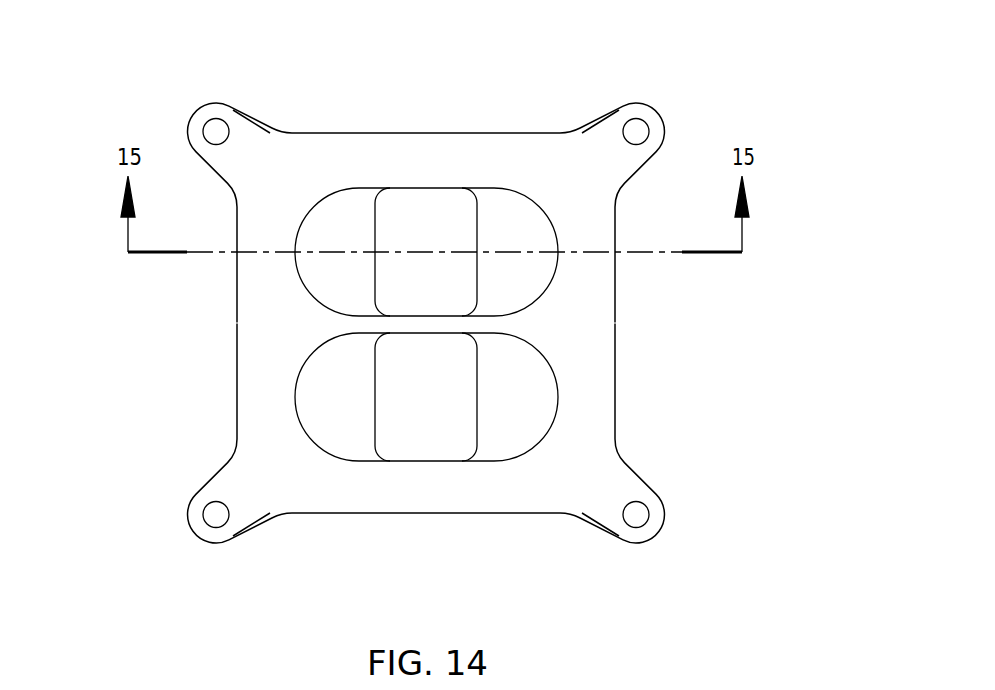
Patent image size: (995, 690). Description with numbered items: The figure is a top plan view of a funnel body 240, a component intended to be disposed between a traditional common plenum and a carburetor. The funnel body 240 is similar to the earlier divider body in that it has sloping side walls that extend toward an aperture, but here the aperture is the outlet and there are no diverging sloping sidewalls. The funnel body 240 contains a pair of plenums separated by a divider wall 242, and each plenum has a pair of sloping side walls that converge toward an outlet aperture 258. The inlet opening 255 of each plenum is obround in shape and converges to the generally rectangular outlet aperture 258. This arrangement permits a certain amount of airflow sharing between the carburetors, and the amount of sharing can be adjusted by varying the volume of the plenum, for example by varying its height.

The funnel body 240 is at (534, 323).
The divider wall 242 is at (508, 327).
The inlet opening 255 is at (513, 223).
The outlet aperture 258 is at (443, 235).